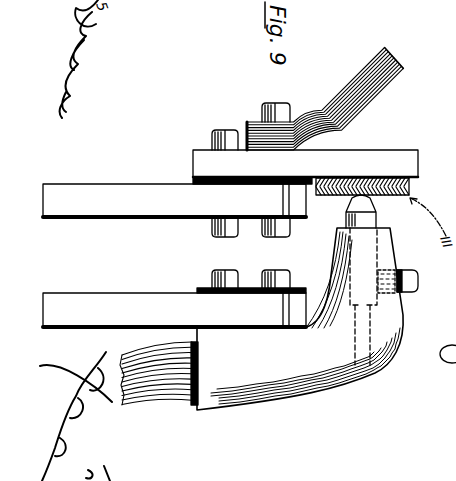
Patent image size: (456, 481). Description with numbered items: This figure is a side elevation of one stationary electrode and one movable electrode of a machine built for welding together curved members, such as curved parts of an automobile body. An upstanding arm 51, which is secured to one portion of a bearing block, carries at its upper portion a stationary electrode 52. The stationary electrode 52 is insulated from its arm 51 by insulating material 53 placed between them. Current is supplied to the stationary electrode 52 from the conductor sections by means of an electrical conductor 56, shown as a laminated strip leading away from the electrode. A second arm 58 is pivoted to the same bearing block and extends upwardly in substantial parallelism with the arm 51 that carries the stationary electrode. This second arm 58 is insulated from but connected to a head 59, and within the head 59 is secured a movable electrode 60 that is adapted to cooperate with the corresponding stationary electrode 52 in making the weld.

The upstanding arm 51 is at (78, 205).
The stationary electrode 52 is at (409, 158).
The insulating material 53 is at (193, 178).
The electrical conductor 56 is at (366, 81).
The second arm 58 is at (88, 320).
The head 59 is at (299, 374).
The electrode 60 is at (366, 213).